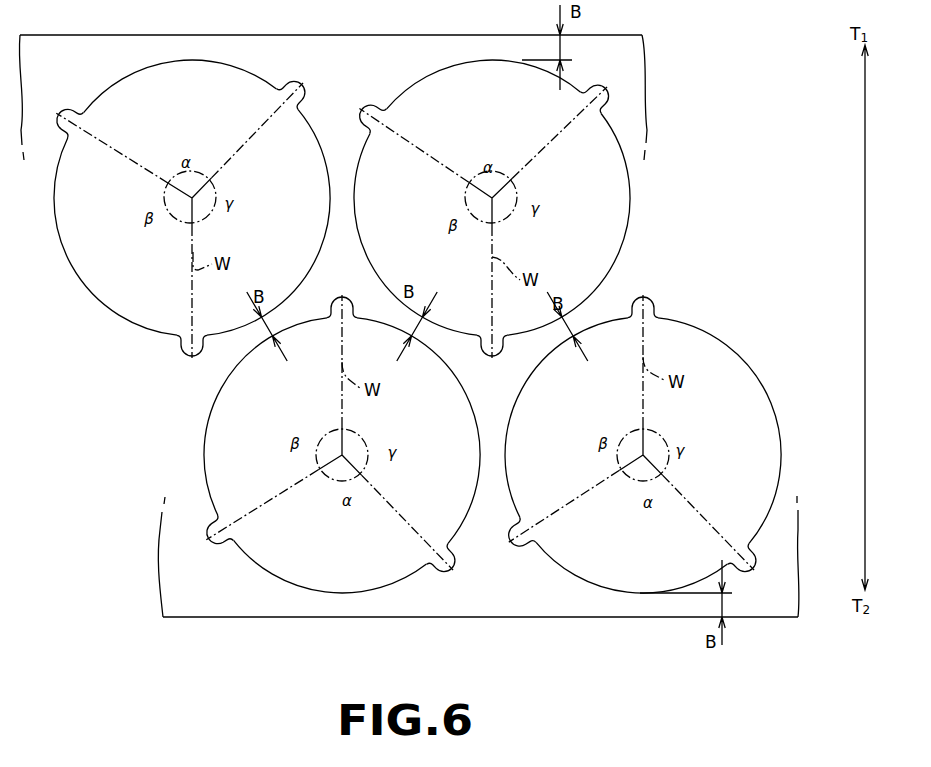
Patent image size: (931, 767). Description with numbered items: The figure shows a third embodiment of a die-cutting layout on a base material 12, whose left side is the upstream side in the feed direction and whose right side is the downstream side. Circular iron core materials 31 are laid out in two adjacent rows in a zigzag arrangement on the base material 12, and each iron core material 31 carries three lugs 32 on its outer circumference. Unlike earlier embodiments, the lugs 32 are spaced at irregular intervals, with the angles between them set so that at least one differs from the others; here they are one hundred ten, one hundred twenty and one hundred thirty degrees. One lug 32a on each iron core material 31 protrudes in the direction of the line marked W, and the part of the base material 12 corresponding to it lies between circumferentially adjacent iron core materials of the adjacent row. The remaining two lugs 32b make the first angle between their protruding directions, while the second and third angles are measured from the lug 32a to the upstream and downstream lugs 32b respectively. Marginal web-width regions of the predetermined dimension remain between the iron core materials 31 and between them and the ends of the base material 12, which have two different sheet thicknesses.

The base material 12 is at (302, 606).
The iron core material 31 is at (86, 280).
The lug 32 is at (439, 342).
The lug 32a is at (180, 352).
The lug 32b is at (70, 116).